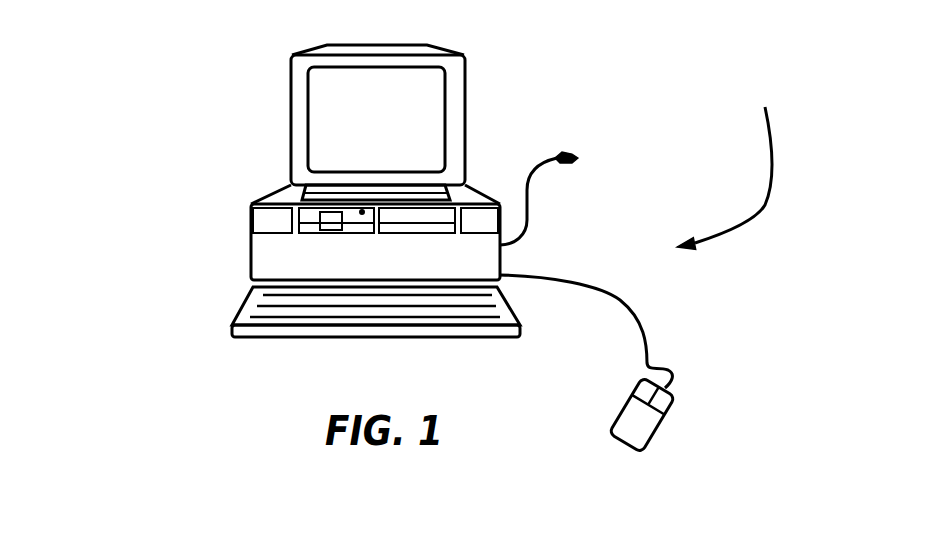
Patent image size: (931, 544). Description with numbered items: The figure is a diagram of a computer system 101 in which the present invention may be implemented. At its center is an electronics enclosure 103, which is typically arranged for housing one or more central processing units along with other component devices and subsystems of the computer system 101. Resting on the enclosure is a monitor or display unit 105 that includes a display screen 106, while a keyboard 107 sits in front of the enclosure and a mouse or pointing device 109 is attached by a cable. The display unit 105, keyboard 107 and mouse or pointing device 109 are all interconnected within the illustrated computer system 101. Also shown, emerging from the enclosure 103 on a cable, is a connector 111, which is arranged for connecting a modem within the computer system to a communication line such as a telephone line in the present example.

The computer system 101 is at (726, 165).
The electronics enclosure 103 is at (273, 247).
The monitor or display unit 105 is at (282, 142).
The display screen 106 is at (410, 112).
The keyboard 107 is at (233, 325).
The mouse or pointing device 109 is at (677, 397).
The connector 111 is at (562, 152).